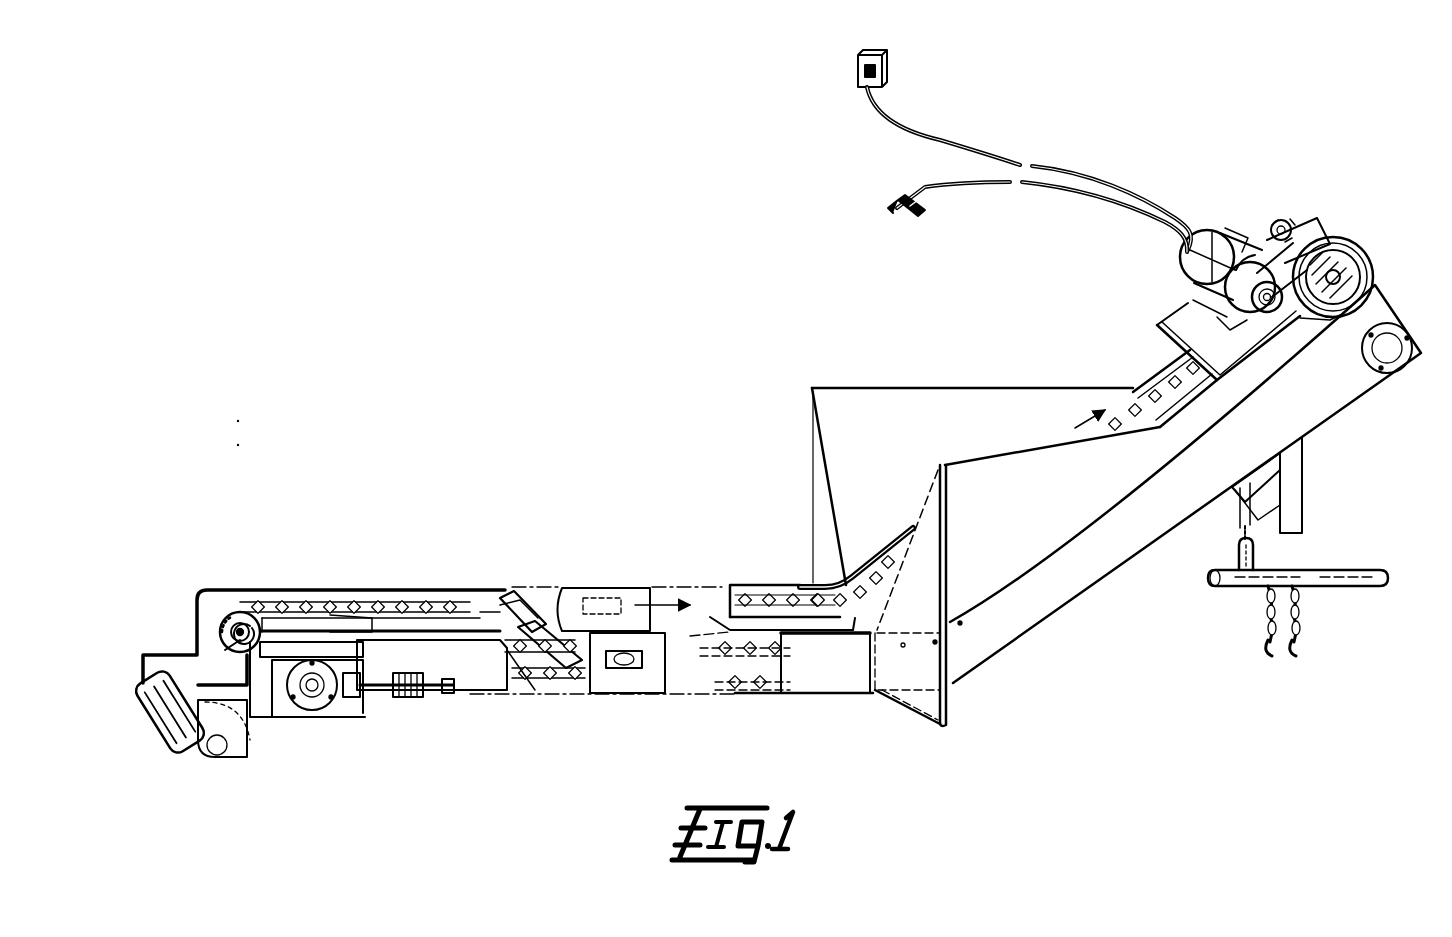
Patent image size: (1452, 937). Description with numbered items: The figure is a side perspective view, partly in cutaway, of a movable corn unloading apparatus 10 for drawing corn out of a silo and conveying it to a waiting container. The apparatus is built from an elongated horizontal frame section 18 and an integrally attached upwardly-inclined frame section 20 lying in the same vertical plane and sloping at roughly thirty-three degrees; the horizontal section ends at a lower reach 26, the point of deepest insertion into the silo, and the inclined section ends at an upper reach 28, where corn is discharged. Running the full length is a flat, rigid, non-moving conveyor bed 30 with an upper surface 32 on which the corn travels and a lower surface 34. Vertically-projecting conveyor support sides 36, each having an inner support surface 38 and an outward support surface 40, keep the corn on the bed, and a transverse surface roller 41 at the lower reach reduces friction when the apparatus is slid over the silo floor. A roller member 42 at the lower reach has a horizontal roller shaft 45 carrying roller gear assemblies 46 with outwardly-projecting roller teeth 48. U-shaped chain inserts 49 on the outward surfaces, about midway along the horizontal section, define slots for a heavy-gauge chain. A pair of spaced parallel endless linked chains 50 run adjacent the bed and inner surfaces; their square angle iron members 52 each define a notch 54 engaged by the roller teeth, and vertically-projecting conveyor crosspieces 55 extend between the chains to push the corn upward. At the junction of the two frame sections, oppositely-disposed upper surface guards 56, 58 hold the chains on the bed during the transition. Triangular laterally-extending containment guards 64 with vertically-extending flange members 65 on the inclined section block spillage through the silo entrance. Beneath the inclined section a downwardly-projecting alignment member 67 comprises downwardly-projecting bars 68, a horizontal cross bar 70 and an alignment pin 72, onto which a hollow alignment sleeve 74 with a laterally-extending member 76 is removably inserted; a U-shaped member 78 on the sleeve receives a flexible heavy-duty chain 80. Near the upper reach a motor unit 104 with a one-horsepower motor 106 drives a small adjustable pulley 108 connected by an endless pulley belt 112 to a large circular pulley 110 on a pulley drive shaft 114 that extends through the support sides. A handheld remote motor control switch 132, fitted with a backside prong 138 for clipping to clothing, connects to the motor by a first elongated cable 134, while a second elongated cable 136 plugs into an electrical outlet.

The movable corn unloading apparatus 10 is at (992, 692).
The elongated horizontal frame section 18 is at (728, 697).
The upwardly-inclined frame section 20 is at (1342, 402).
The lower reach 26 is at (163, 641).
The upper reach 28 is at (1385, 280).
The conveyor bed 30 is at (725, 627).
The upper surface 32 is at (432, 625).
The lower surface 34 is at (436, 702).
The conveyor support sides 36 is at (255, 705).
The inner support surface 38 is at (757, 590).
The outward support surface 40 is at (483, 680).
The surface roller 41 is at (158, 728).
The roller member 42 is at (233, 653).
The horizontal roller shaft 45 is at (254, 625).
The roller gear assemblies 46 is at (219, 620).
The roller teeth 48 is at (240, 612).
The chain inserts 49 is at (606, 596).
The endless linked chains 50 is at (578, 687).
The angle iron members 52 is at (522, 681).
The notch 54 is at (495, 592).
The conveyor crosspieces 55 is at (520, 605).
The upper surface guard 56 is at (877, 640).
The upper surface guard 58 is at (843, 576).
The containment guards 64 is at (903, 435).
The flange members 65 is at (822, 475).
The alignment member 67 is at (1308, 508).
The downwardly-projecting bars 68 is at (1293, 463).
The horizontal cross bar 70 is at (1238, 505).
The alignment pin 72 is at (1242, 522).
The alignment sleeve 74 is at (1370, 582).
The laterally-extending member 76 is at (1256, 557).
The U-shaped member 78 is at (1265, 600).
The flexible heavy-duty chain 80 is at (1265, 634).
The motor unit 104 is at (1212, 218).
The one-horsepower motor 106 is at (1190, 284).
The small adjustable pulley 108 is at (1265, 302).
The large circular pulley 110 is at (1355, 240).
The endless pulley belt 112 is at (1296, 303).
The pulley drive shaft 114 is at (1300, 225).
The remote motor control switch 132 is at (860, 72).
The first elongated cable 134 is at (948, 140).
The second elongated cable 136 is at (930, 190).
The backside prong 138 is at (886, 68).